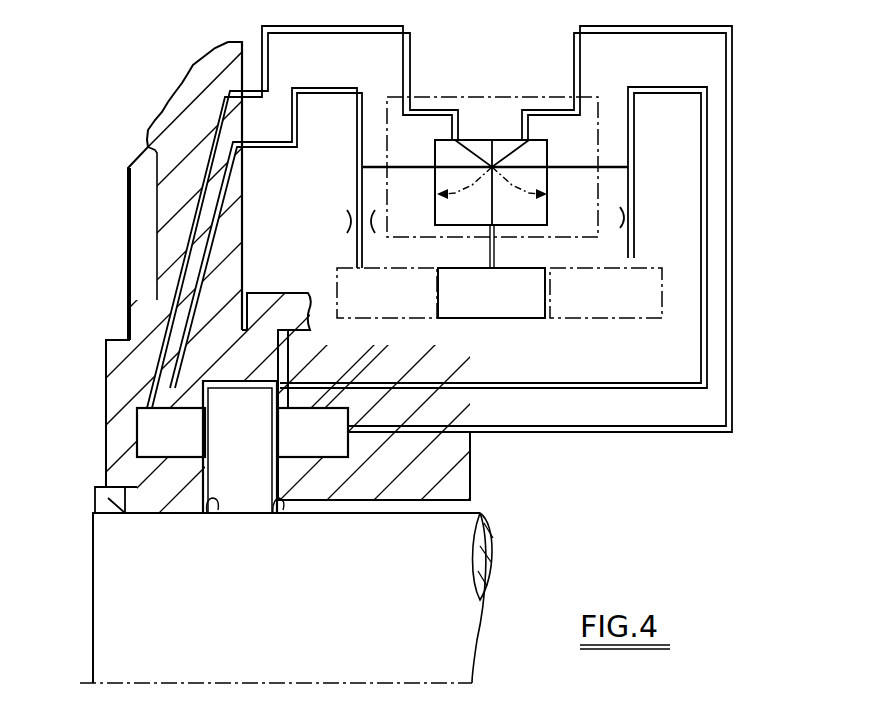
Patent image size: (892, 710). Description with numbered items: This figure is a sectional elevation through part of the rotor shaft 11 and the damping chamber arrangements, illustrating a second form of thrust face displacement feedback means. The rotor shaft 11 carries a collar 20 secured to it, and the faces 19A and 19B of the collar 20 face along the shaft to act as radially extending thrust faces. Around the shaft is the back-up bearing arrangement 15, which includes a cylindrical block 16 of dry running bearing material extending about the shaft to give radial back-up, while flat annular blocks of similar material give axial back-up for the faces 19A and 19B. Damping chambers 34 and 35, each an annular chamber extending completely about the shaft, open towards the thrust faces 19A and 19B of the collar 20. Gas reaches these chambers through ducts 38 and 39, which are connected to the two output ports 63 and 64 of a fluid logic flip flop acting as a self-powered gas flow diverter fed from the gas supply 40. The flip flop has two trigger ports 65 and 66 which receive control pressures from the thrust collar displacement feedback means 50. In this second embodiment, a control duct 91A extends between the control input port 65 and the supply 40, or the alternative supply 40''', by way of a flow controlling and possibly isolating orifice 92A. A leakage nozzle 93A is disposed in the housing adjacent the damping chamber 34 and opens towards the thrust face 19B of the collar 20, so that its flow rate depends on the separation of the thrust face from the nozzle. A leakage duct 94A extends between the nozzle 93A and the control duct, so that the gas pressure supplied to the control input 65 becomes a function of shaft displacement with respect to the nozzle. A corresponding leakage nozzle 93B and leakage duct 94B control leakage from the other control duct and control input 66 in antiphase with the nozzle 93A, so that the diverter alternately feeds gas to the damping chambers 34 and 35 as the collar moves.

The rotor shaft 11 is at (447, 567).
The back-up bearing arrangement 15 is at (197, 525).
The cylindrical block 16 is at (125, 516).
The face of collar 19A is at (283, 515).
The face of collar 19B is at (217, 515).
The collar 20 is at (250, 445).
The damping chamber 34 is at (324, 505).
The damping chamber 35 is at (175, 513).
The duct 38 is at (690, 433).
The duct 39 is at (140, 376).
The gas supply 40 is at (441, 271).
The alternative supply 40''' is at (606, 293).
The thrust collar displacement feedback means 50 is at (258, 360).
The output port 63 is at (578, 97).
The output port 64 is at (412, 97).
The trigger port 65 is at (597, 166).
The trigger port 66 is at (390, 167).
The control duct 91A is at (633, 252).
The orifice 92A is at (648, 229).
The leakage nozzle 93A is at (300, 370).
The leakage nozzle 93B is at (190, 387).
The leakage duct 94A is at (517, 383).
The leakage duct 94B is at (242, 238).